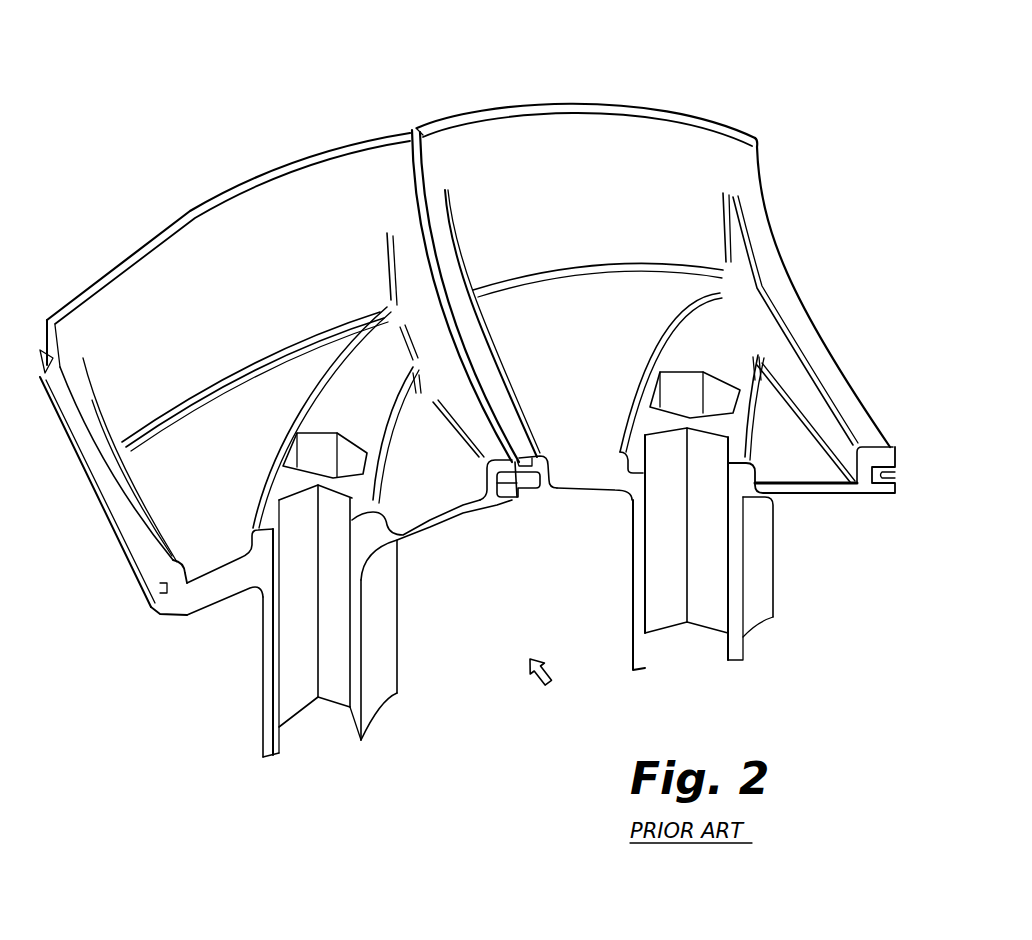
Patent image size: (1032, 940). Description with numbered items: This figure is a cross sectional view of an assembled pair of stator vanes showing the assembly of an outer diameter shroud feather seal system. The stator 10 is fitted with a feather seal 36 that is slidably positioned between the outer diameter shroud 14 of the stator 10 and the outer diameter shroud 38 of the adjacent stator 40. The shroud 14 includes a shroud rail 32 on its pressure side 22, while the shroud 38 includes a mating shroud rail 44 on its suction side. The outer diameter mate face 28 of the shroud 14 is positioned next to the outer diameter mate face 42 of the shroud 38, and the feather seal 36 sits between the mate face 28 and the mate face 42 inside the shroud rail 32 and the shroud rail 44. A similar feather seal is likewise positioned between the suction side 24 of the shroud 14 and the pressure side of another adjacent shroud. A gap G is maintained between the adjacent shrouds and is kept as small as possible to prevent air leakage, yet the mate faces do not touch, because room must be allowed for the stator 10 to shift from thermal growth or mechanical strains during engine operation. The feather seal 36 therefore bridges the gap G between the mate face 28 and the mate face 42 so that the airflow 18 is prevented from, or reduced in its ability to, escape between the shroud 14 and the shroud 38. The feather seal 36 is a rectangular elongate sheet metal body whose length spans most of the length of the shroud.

The stator 10 is at (217, 191).
The adjacent stator 40 is at (606, 88).
The gap G is at (330, 120).
The outer diameter mate face 42 is at (486, 403).
The mating shroud rail 44 is at (541, 460).
The outer diameter shroud 14 is at (443, 490).
The shroud rail 32 is at (501, 503).
The outer diameter mate face 28 is at (518, 500).
The feather seal 36 is at (530, 487).
The outer diameter shroud 38 is at (603, 457).
The pressure side 22 is at (323, 621).
The suction side 24 is at (262, 683).
The airflow 18 is at (553, 672).